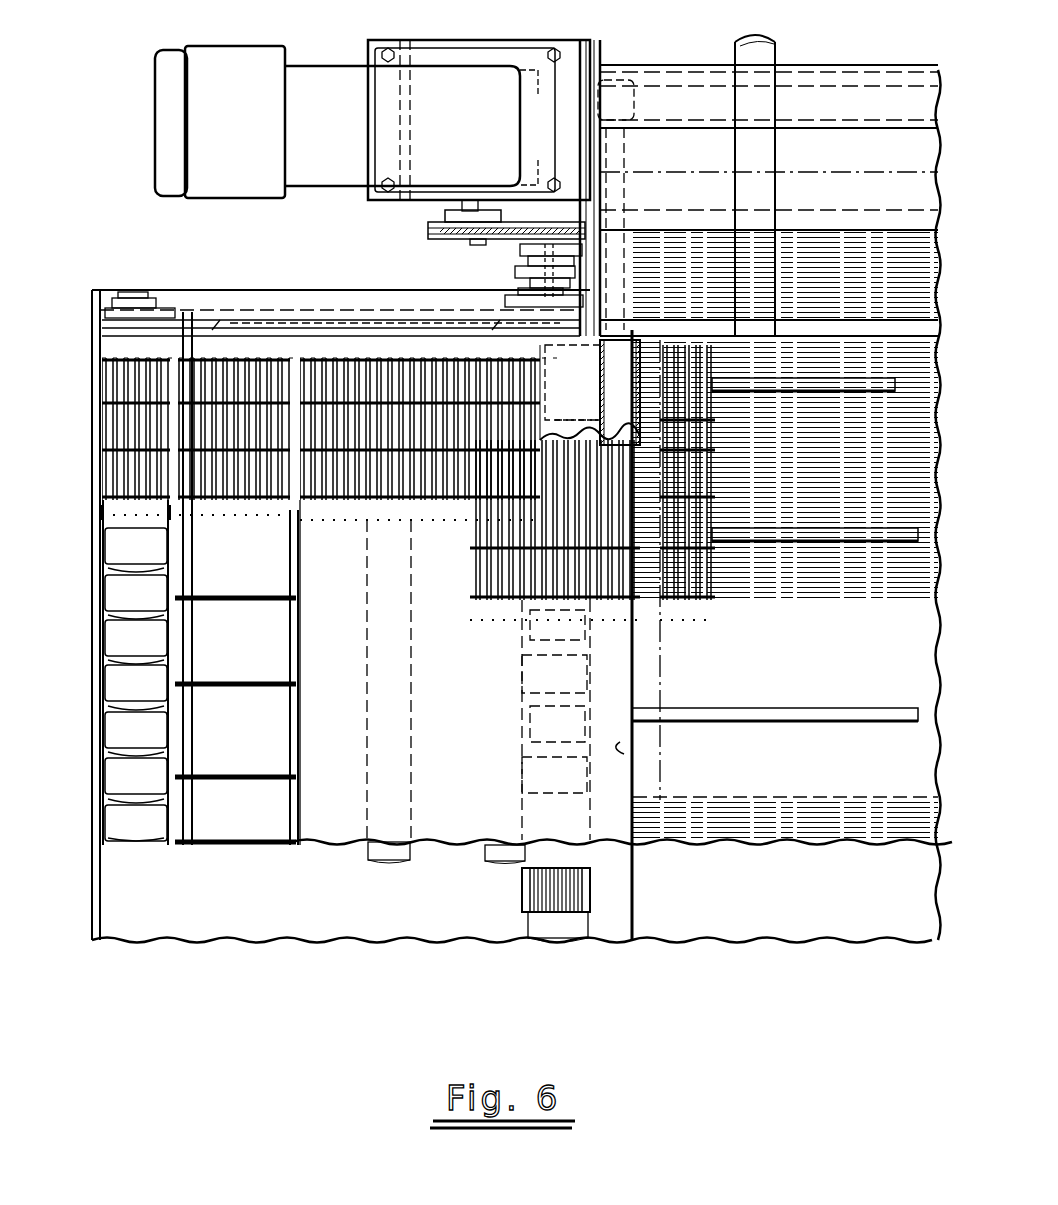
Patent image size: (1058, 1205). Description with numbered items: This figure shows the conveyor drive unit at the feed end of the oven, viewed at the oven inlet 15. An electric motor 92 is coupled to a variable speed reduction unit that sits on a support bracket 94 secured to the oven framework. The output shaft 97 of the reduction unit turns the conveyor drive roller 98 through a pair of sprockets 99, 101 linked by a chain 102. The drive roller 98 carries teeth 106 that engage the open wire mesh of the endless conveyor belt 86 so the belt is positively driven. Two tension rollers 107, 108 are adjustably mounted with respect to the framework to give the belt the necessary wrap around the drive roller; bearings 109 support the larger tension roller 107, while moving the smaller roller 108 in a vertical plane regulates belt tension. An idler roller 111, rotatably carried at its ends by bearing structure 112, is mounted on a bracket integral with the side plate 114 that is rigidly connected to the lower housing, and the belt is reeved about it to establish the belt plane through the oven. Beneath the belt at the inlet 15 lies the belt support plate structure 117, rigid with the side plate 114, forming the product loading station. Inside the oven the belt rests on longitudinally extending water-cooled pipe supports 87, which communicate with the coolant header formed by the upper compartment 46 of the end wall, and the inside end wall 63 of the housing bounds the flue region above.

The oven inlet 15 is at (592, 476).
The upper compartment 46 is at (628, 748).
The inside end wall 63 is at (632, 399).
The endless conveyor belt 86 is at (332, 512).
The pipe supports 87 is at (814, 542).
The electric motor 92 is at (345, 140).
The support bracket 94 is at (590, 48).
The output shaft 97 is at (472, 200).
The conveyor drive roller 98 is at (562, 922).
The sprocket 99 is at (445, 215).
The sprocket 101 is at (530, 252).
The chain 102 is at (452, 240).
The teeth 106 is at (528, 904).
The tension roller 107 is at (500, 858).
The tension roller 108 is at (388, 858).
The bearings 109 is at (514, 302).
The idler roller 111 is at (102, 762).
The bearing structure 112 is at (106, 324).
The side plate 114 is at (264, 350).
The belt support plate structure 117 is at (426, 686).